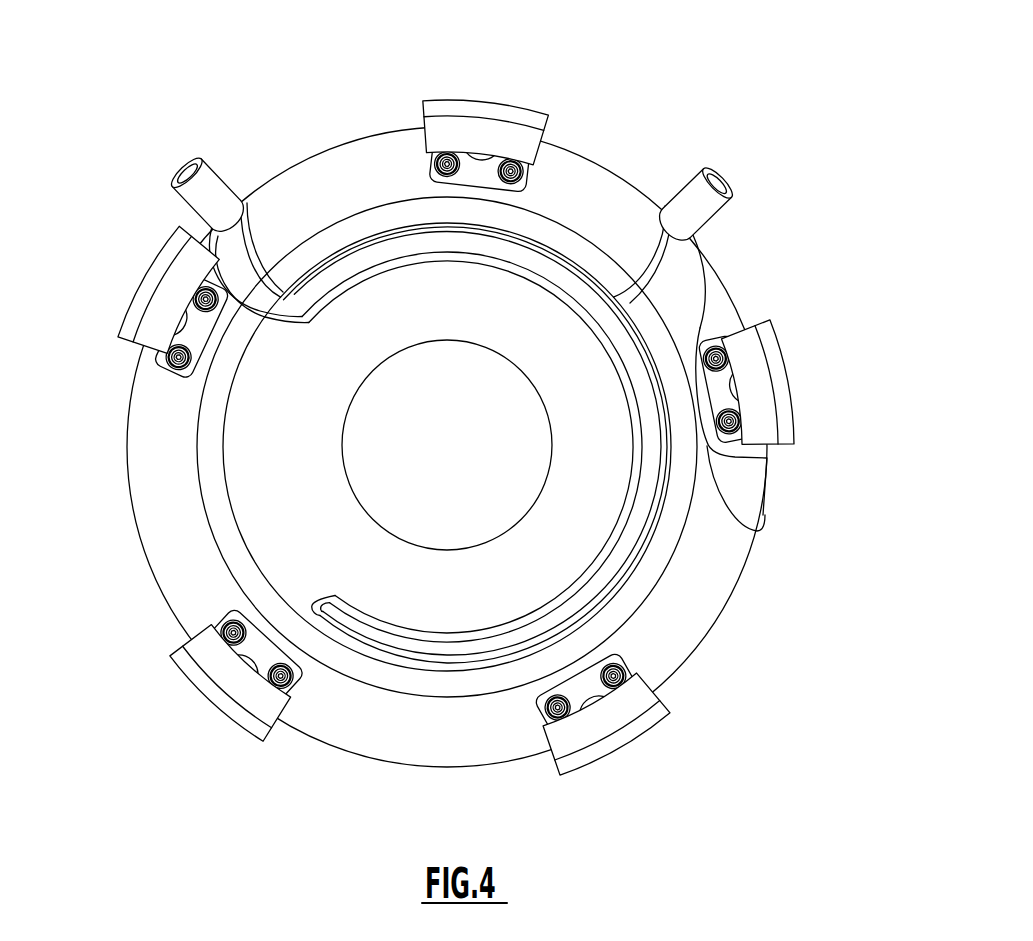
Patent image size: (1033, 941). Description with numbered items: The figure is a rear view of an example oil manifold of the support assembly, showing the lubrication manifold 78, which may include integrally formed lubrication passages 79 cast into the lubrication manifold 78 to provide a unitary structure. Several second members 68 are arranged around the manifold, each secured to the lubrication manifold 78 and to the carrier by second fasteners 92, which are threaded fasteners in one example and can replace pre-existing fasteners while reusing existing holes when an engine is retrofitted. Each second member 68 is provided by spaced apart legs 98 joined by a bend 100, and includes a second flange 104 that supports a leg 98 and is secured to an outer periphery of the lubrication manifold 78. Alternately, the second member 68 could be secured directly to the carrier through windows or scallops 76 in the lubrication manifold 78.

The second member 68 is at (482, 421).
The windows or scallops 76 is at (711, 318).
The lubrication manifold 78 is at (592, 140).
The lubrication passages 79 is at (639, 262).
The second fasteners 92 is at (732, 418).
The legs 98 is at (772, 417).
The bend 100 is at (800, 415).
The second flange 104 is at (750, 527).